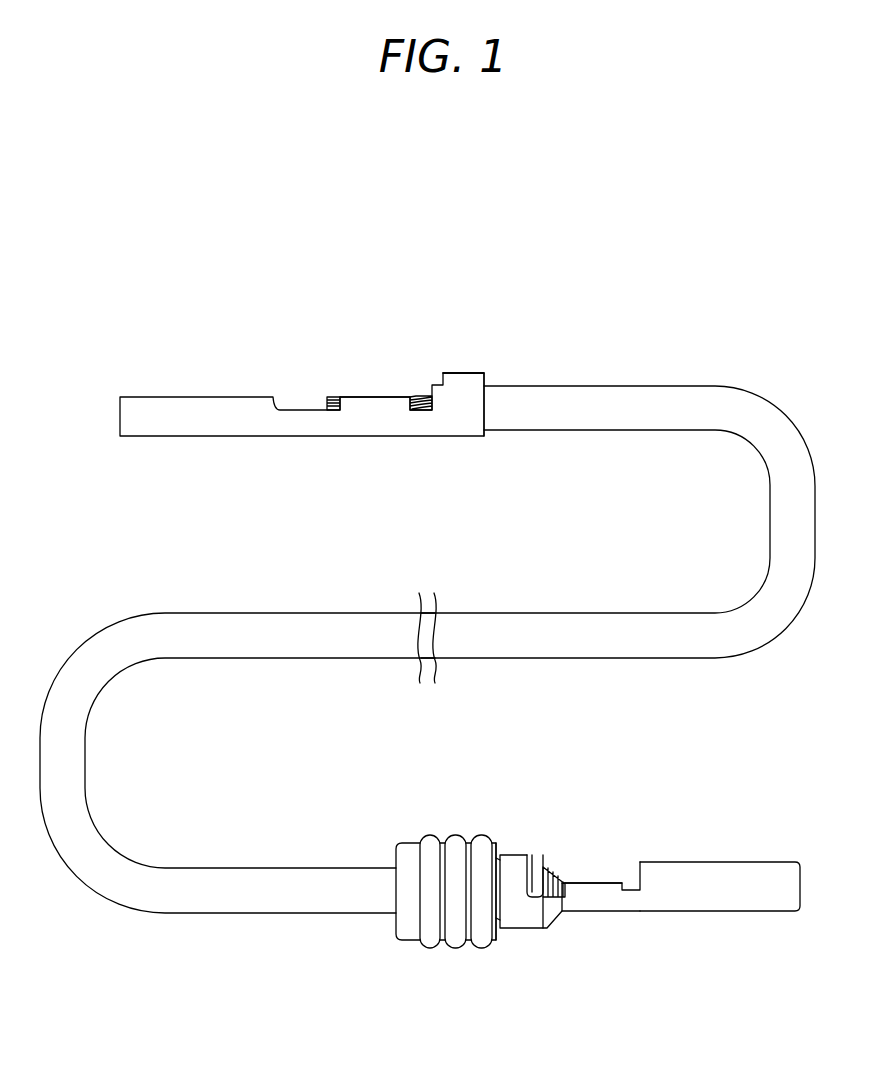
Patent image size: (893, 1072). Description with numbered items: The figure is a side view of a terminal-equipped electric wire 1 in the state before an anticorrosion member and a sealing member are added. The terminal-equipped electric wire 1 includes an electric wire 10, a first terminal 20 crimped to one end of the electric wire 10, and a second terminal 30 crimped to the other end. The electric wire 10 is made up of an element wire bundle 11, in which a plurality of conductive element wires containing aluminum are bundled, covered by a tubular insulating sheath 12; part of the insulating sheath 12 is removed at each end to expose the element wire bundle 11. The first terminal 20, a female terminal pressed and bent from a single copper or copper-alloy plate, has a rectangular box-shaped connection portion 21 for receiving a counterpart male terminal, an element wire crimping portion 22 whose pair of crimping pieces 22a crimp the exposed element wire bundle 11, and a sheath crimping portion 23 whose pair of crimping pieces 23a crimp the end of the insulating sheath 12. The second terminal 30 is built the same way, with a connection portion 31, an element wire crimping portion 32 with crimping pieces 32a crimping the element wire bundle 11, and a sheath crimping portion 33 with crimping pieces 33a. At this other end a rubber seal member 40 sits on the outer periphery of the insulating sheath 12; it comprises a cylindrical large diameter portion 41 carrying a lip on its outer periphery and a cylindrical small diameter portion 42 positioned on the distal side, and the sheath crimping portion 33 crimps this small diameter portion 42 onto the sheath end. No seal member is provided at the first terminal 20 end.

The terminal-equipped electric wire 1 is at (750, 300).
The electric wire 10 is at (449, 613).
The element wire bundle 11 is at (333, 398).
The insulating sheath 12 is at (551, 385).
The first terminal 20 is at (350, 600).
The connection portion 21 is at (199, 437).
The element wire crimping portion 22 is at (375, 413).
The crimping pieces 22a is at (367, 396).
The sheath crimping portion 23 is at (465, 406).
The crimping pieces 23a is at (461, 372).
The second terminal 30 is at (650, 894).
The connection portion 31 is at (718, 913).
The element wire crimping portion 32 is at (601, 903).
The crimping pieces 32a is at (600, 882).
The sheath crimping portion 33 is at (531, 898).
The crimping pieces 33a is at (521, 854).
The seal member 40 is at (454, 897).
The large diameter portion 41 is at (448, 834).
The small diameter portion 42 is at (497, 855).